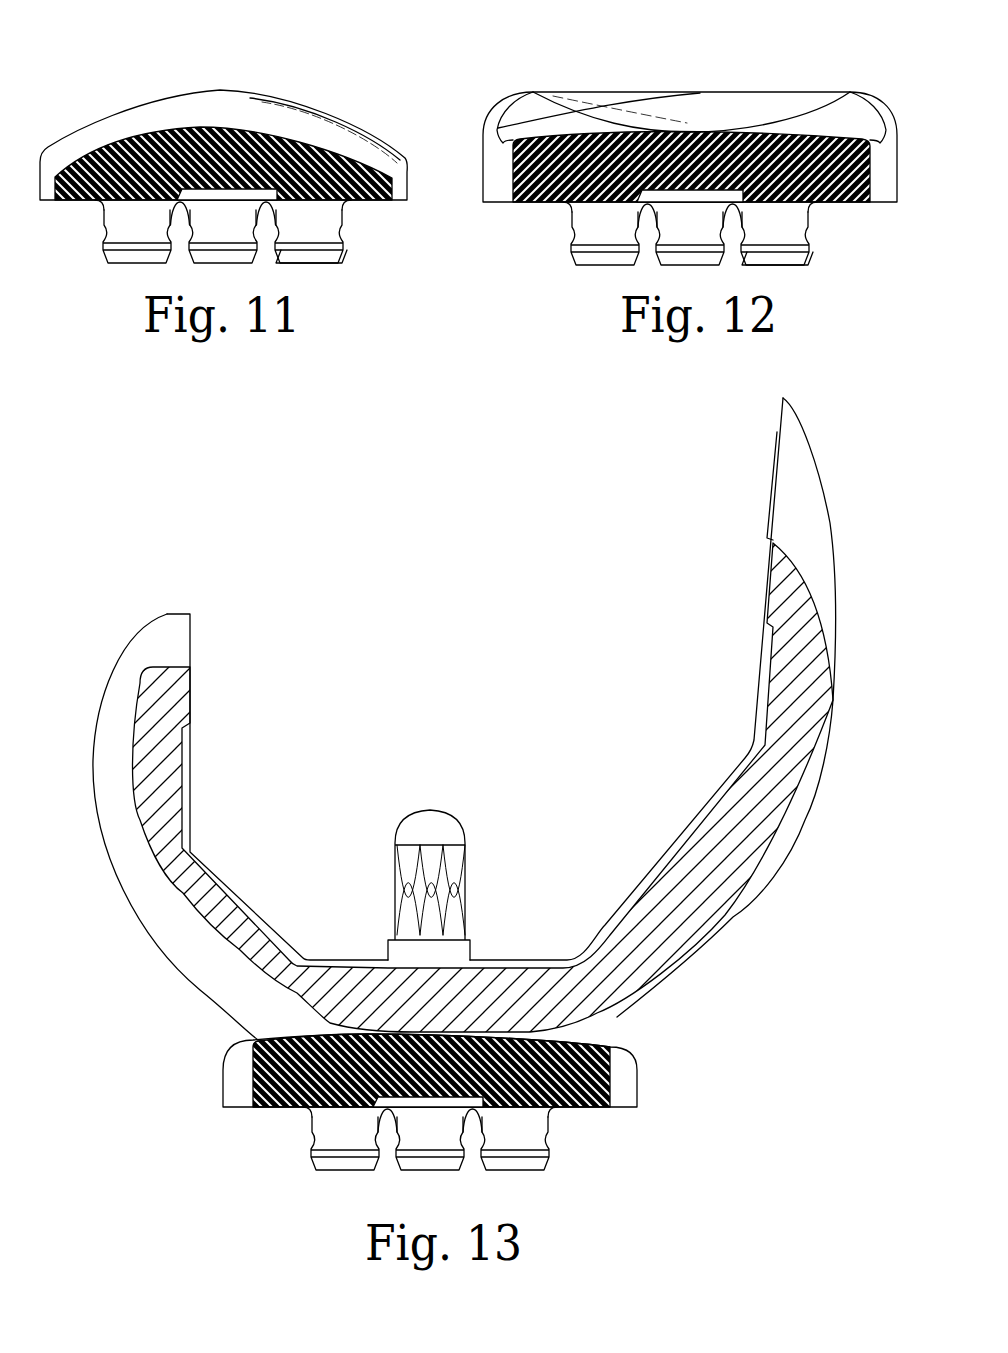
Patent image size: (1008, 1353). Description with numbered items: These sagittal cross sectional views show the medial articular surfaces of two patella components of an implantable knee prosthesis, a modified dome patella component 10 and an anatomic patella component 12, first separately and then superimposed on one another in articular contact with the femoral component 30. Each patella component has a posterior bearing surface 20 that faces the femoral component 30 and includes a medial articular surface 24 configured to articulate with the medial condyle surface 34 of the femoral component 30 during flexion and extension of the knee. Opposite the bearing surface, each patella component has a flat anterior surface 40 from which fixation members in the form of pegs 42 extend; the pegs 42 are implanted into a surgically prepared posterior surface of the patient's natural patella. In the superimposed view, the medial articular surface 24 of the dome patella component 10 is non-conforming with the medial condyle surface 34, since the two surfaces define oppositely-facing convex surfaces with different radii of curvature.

In FIG. 11, the modified dome patella component 10 is at (333, 94).
In FIG. 13, the modified dome patella component 10 is at (441, 1044).
In FIG. 12, the anatomic patella component 12 is at (815, 79).
In FIG. 13, the anatomic patella component 12 is at (637, 1098).
In FIG. 11, the posterior bearing surface 20 is at (286, 128).
In FIG. 12, the posterior bearing surface 20 is at (711, 127).
In FIG. 13, the posterior bearing surface 20 is at (253, 1070).
In FIG. 11, the medial articular surface 24 is at (157, 133).
In FIG. 12, the medial articular surface 24 is at (670, 127).
In FIG. 13, the medial articular surface 24 is at (330, 1038).
In FIG. 13, the femoral component 30 is at (464, 719).
In FIG. 13, the medial condyle surface 34 is at (243, 970).
In FIG. 11, the flat anterior surface 40 is at (76, 203).
In FIG. 12, the flat anterior surface 40 is at (857, 204).
In FIG. 13, the flat anterior surface 40 is at (567, 1109).
In FIG. 11, the pegs 42 is at (338, 264).
In FIG. 12, the pegs 42 is at (805, 265).